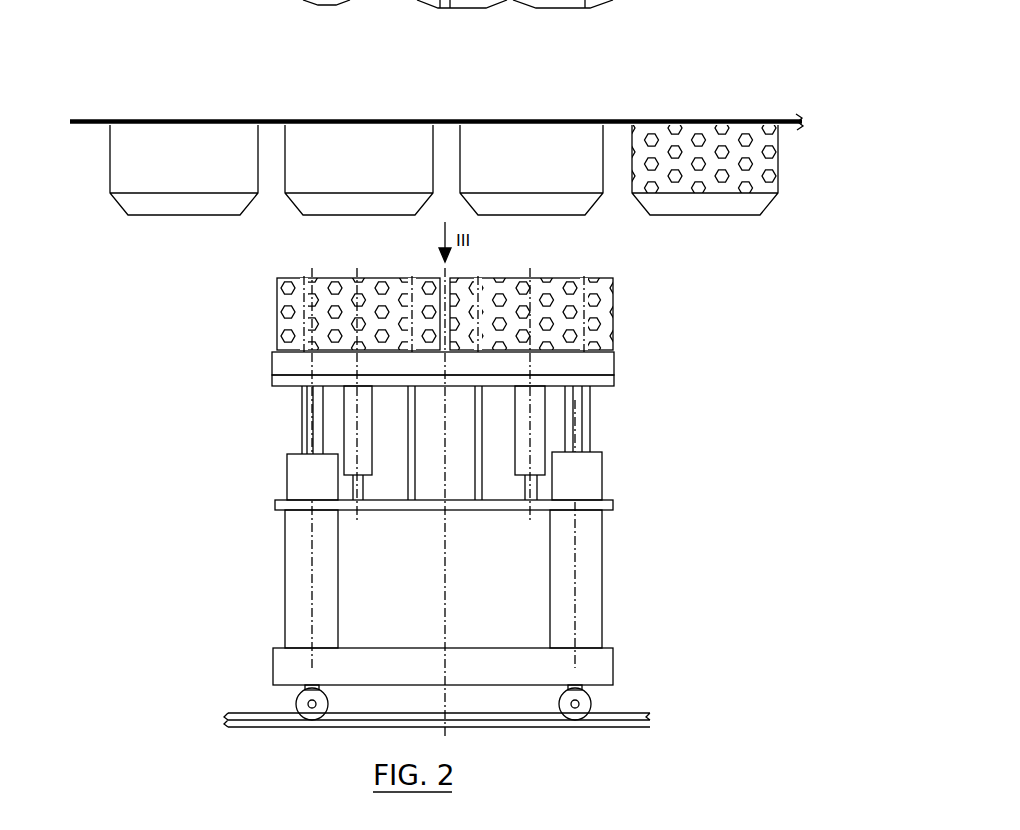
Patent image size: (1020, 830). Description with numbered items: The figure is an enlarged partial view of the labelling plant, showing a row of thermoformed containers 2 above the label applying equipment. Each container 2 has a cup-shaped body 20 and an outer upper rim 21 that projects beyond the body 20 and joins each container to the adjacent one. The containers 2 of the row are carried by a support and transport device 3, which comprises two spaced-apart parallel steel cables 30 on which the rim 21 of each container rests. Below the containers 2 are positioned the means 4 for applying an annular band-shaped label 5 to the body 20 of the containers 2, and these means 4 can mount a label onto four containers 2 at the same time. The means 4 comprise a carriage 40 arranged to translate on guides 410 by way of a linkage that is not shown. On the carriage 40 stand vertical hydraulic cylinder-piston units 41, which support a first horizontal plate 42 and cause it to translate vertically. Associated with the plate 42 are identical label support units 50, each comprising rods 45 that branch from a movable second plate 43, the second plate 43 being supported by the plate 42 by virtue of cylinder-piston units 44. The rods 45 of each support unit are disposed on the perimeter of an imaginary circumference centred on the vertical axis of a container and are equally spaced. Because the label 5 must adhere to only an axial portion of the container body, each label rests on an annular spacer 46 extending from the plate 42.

The container 2 is at (788, 176).
The cup-shaped body 20 is at (196, 167).
The outer upper rim 21 is at (270, 120).
The support and transport device 3 is at (429, 142).
The steel cable 30 is at (82, 124).
The means for applying a label 4 is at (473, 503).
The carriage 40 is at (612, 663).
The vertical hydraulic cylinder-piston unit 41 is at (292, 608).
The first horizontal plate 42 is at (615, 378).
The movable second plate 43 is at (280, 500).
The cylinder-piston unit 44 is at (350, 424).
The rod 45 is at (300, 395).
The annular spacer 46 is at (615, 357).
The annular band-shaped label 5 is at (427, 311).
The label support unit 50 is at (287, 326).
The guide 410 is at (620, 728).